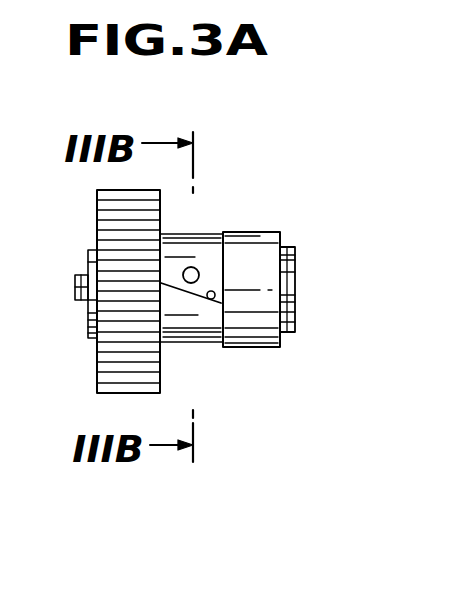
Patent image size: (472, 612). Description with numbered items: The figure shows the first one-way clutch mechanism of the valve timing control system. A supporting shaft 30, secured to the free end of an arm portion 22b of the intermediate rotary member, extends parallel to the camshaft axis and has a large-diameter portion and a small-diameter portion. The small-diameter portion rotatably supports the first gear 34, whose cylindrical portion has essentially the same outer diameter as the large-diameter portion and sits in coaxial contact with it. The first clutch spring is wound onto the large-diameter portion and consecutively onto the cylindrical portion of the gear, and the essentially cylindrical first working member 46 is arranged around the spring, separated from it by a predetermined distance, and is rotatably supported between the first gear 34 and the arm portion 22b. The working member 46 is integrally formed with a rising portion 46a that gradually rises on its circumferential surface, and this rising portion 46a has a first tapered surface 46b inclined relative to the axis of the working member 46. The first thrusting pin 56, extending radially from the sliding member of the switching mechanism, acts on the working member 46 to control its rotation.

The first gear 34 is at (97, 222).
The first working member 46 is at (190, 234).
The first thrusting pin 56 is at (195, 267).
The arm portion 22b is at (265, 240).
The supporting shaft 30 is at (287, 285).
The first tapered surface 46b is at (204, 301).
The rising portion 46a is at (190, 340).